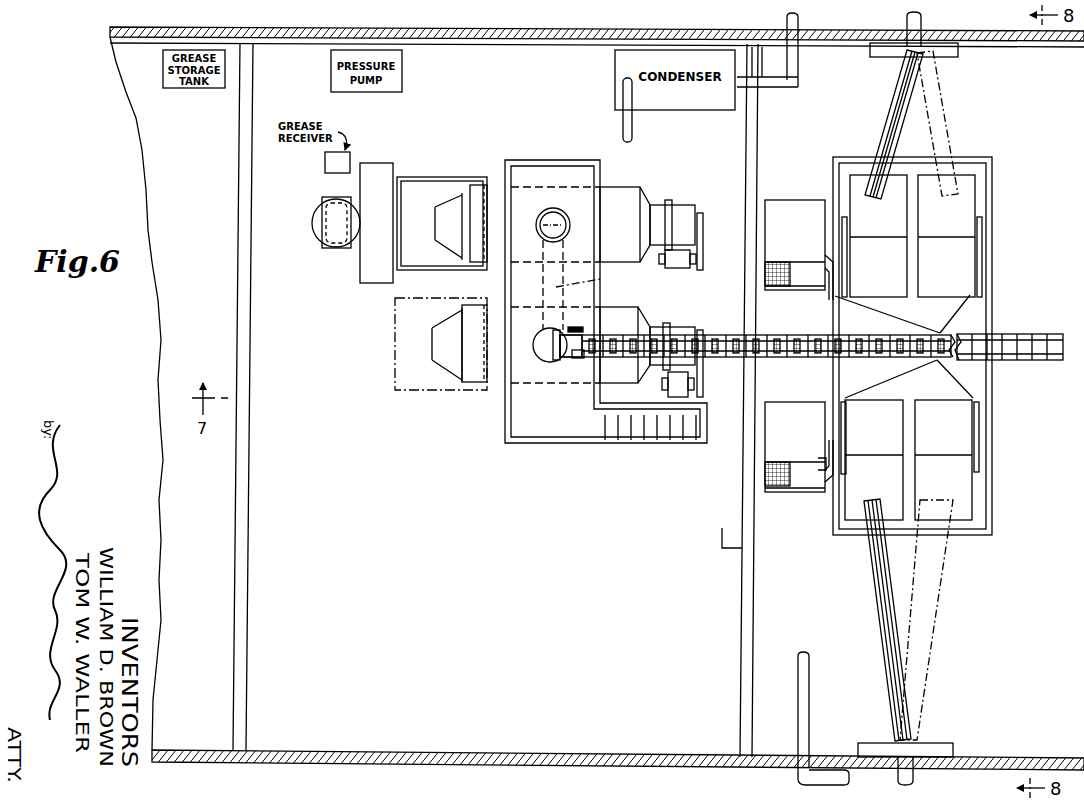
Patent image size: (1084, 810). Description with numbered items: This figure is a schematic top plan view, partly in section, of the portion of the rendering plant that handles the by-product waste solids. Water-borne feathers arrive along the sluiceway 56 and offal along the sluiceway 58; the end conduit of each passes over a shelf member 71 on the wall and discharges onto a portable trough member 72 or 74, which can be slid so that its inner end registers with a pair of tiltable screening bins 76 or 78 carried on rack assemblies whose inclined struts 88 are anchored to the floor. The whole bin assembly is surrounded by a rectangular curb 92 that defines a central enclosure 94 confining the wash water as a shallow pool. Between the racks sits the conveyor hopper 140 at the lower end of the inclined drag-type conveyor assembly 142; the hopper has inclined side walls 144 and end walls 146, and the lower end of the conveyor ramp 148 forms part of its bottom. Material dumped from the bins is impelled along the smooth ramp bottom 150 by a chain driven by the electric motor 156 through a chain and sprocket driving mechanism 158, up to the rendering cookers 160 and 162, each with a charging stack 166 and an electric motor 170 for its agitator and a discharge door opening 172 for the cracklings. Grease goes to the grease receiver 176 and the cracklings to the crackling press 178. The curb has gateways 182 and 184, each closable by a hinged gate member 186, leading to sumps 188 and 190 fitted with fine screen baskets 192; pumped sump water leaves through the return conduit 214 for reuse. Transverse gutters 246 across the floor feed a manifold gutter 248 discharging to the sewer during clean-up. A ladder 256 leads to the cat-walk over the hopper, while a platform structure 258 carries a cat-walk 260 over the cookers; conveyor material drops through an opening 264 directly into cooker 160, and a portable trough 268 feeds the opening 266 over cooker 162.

The feather transporting sluiceway 56 is at (914, 780).
The offal transporting sluiceway 58 is at (922, 28).
The supporting bracket or shelf member 71 is at (940, 58).
The portable trough member 72 is at (905, 640).
The portable trough member 74 is at (900, 118).
The tiltable dump pans or screening bins 76 is at (908, 460).
The tiltable dump pans or screening bins 78 is at (912, 236).
The inclined struts 88 is at (842, 400).
The curb 92 is at (985, 403).
The central enclosure 94 is at (838, 170).
The conveyor sump or hopper 140 is at (918, 331).
The inclined drag-type conveyor assembly 142 is at (723, 330).
The inclined side walls 144 is at (965, 300).
The inclined end walls 146 is at (856, 317).
The conveyor ramp 148 is at (858, 333).
The ramp bottom 150 is at (722, 358).
The electric motor 156 is at (580, 358).
The chain and sprocket driving mechanism 158 is at (583, 328).
The rendering cooker 160 is at (651, 352).
The rendering cooker 162 is at (651, 228).
The charging stack 166 is at (547, 362).
The electric motor 170 is at (676, 270).
The discharge door opening 172 is at (436, 230).
The grease receiver 176 is at (350, 154).
The crackling press 178 is at (326, 250).
The gateway 182 is at (838, 270).
The gateway 184 is at (786, 488).
The hinged gate member 186 is at (818, 465).
The sump 188 is at (787, 205).
The sump 190 is at (783, 500).
The fine screen baskets or trays 192 is at (765, 277).
The return conduit 214 is at (810, 720).
The transverse gutters 246 is at (252, 568).
The manifold gutter 248 is at (553, 42).
The ladder 256 is at (1042, 334).
The platform structure 258 is at (604, 170).
The cat-walk 260 is at (540, 168).
The opening 264 is at (559, 362).
The opening 266 is at (560, 238).
The portable trough 268 is at (594, 279).